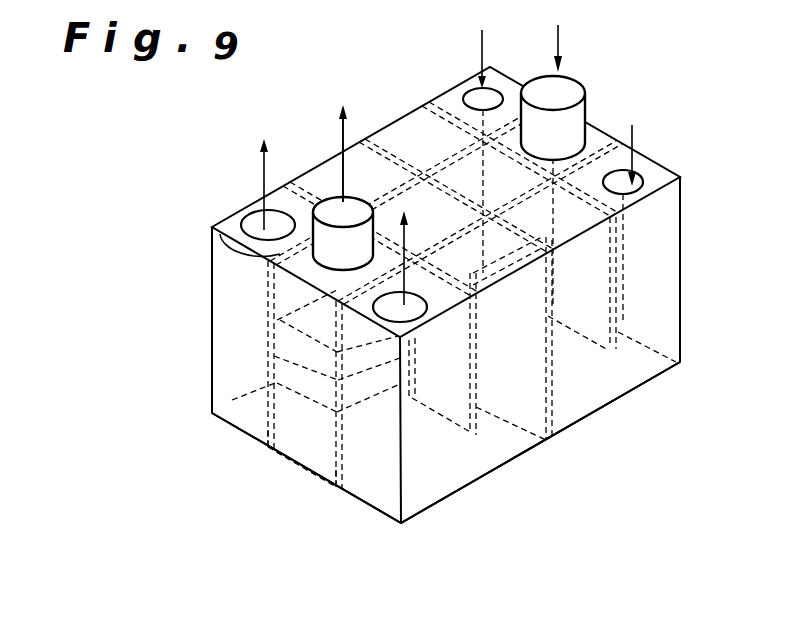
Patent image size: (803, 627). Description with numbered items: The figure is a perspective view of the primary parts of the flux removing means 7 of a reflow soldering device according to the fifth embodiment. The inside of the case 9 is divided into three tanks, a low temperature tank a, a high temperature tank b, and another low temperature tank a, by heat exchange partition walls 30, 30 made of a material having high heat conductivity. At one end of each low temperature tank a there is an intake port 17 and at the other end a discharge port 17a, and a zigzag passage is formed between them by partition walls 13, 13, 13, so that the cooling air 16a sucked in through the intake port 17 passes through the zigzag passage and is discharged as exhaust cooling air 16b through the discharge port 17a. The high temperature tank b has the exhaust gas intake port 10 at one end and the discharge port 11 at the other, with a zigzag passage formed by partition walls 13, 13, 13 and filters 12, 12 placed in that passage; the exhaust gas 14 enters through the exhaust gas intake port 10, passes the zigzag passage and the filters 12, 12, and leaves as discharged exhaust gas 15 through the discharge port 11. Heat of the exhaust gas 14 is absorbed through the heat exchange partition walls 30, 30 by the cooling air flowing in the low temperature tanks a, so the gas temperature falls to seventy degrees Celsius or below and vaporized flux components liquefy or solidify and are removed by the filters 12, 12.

The flux removing means 7 is at (499, 480).
The case 9 is at (532, 450).
The exhaust gas intake port 10 is at (585, 100).
The discharge port 11 is at (273, 253).
The filter 12 is at (292, 343).
The partition wall 13 is at (315, 195).
The exhaust gas 14 is at (558, 29).
The discharged exhaust gas 15 is at (335, 113).
The cooling air 16a is at (481, 33).
The exhaust cooling air 16b is at (277, 167).
The intake port 17 is at (500, 93).
The discharge port 17a is at (252, 230).
The heat exchange partition wall 30 is at (268, 432).
The low temperature tank a is at (233, 413).
The high temperature tank b is at (310, 450).